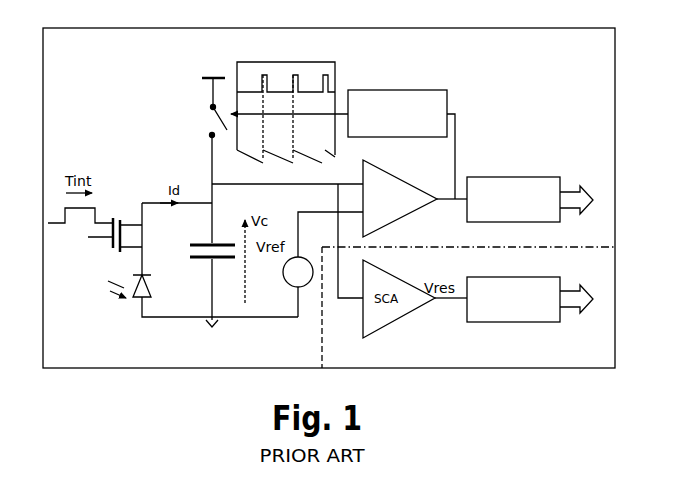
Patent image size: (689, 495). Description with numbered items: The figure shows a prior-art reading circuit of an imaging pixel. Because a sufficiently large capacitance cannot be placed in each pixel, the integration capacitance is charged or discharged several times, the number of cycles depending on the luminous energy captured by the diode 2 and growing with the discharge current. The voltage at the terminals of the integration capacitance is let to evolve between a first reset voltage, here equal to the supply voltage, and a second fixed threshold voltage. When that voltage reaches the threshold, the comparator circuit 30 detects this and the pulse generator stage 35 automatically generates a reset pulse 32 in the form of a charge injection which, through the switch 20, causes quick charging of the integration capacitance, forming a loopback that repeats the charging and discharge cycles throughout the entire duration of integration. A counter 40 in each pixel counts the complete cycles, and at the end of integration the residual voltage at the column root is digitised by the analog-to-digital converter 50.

The diode 2 is at (124, 285).
The switch 20 is at (194, 117).
The comparator circuit 30 is at (397, 190).
The reset pulse 32 is at (306, 82).
The pulse generator stage 35 is at (422, 88).
The counter 40 is at (497, 177).
The analog-to-digital converter 50 is at (520, 322).